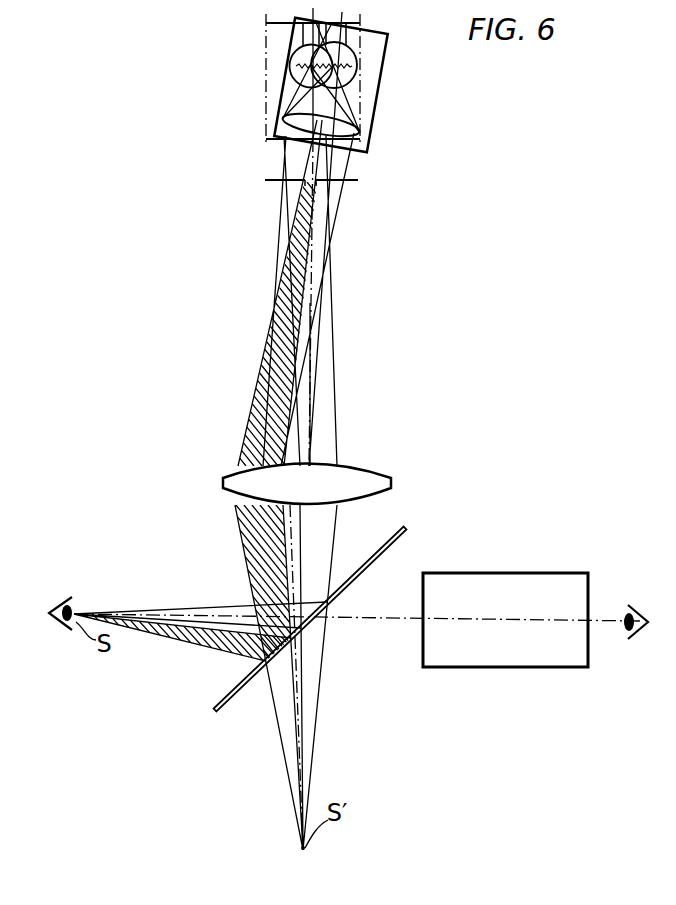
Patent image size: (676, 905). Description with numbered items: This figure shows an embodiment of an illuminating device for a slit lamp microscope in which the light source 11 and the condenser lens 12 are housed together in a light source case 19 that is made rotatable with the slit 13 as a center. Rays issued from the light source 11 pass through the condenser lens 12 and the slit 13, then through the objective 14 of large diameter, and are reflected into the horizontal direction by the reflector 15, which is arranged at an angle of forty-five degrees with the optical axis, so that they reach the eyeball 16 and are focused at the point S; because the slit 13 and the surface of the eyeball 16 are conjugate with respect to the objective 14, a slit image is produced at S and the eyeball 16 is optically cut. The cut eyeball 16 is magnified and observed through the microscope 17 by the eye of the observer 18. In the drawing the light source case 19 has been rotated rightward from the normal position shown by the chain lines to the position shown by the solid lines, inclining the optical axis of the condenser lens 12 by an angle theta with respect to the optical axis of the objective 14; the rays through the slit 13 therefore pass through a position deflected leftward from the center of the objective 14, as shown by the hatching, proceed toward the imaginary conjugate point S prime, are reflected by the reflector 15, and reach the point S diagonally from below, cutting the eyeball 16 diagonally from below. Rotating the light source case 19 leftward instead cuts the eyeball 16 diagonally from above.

The light source 11 is at (357, 78).
The light source case 19 is at (370, 113).
The condenser lens 12 is at (362, 134).
The slit 13 is at (316, 180).
The objective 14 is at (386, 484).
The reflector 15 is at (402, 528).
The eyeball 16 is at (72, 606).
The microscope 17 is at (520, 587).
The eye of the observer 18 is at (624, 613).